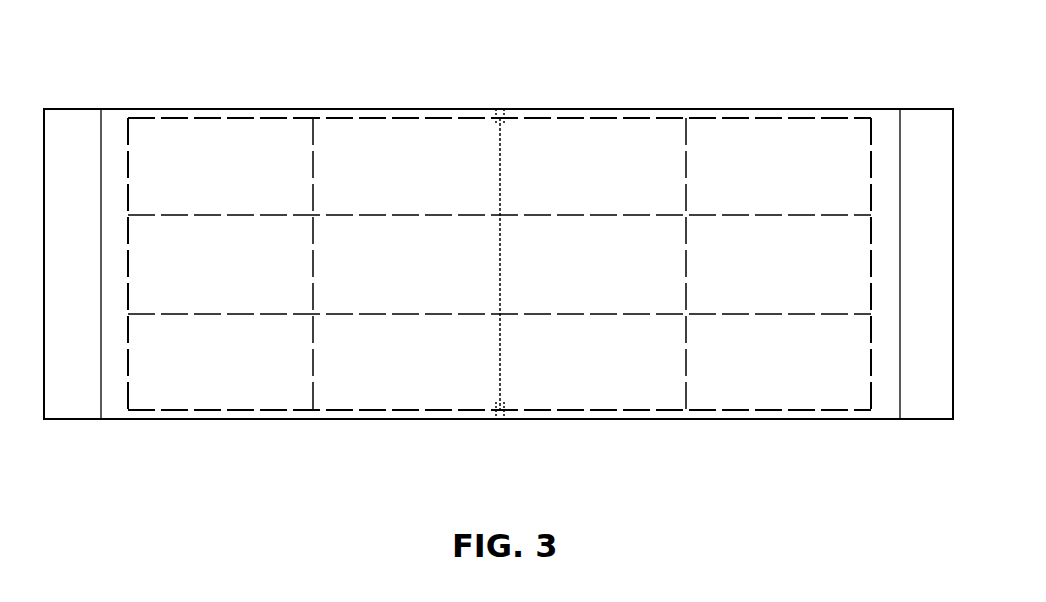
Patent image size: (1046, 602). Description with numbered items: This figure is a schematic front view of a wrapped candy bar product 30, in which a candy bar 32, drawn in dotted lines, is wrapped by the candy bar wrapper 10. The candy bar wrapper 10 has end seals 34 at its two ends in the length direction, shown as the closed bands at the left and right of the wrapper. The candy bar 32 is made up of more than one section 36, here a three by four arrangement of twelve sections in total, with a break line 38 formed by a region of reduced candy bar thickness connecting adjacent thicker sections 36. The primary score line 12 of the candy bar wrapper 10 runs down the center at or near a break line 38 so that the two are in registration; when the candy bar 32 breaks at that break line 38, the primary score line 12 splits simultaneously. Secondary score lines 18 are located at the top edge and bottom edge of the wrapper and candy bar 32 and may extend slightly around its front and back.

The wrapped candy bar product 30 is at (833, 78).
The end seals 34 is at (84, 274).
The candy bar wrapper 10 is at (190, 108).
The candy bar 32 is at (236, 408).
The section 36 is at (595, 373).
The break line 38 is at (490, 150).
The primary score line 12 is at (500, 181).
The secondary score lines 18 is at (496, 405).